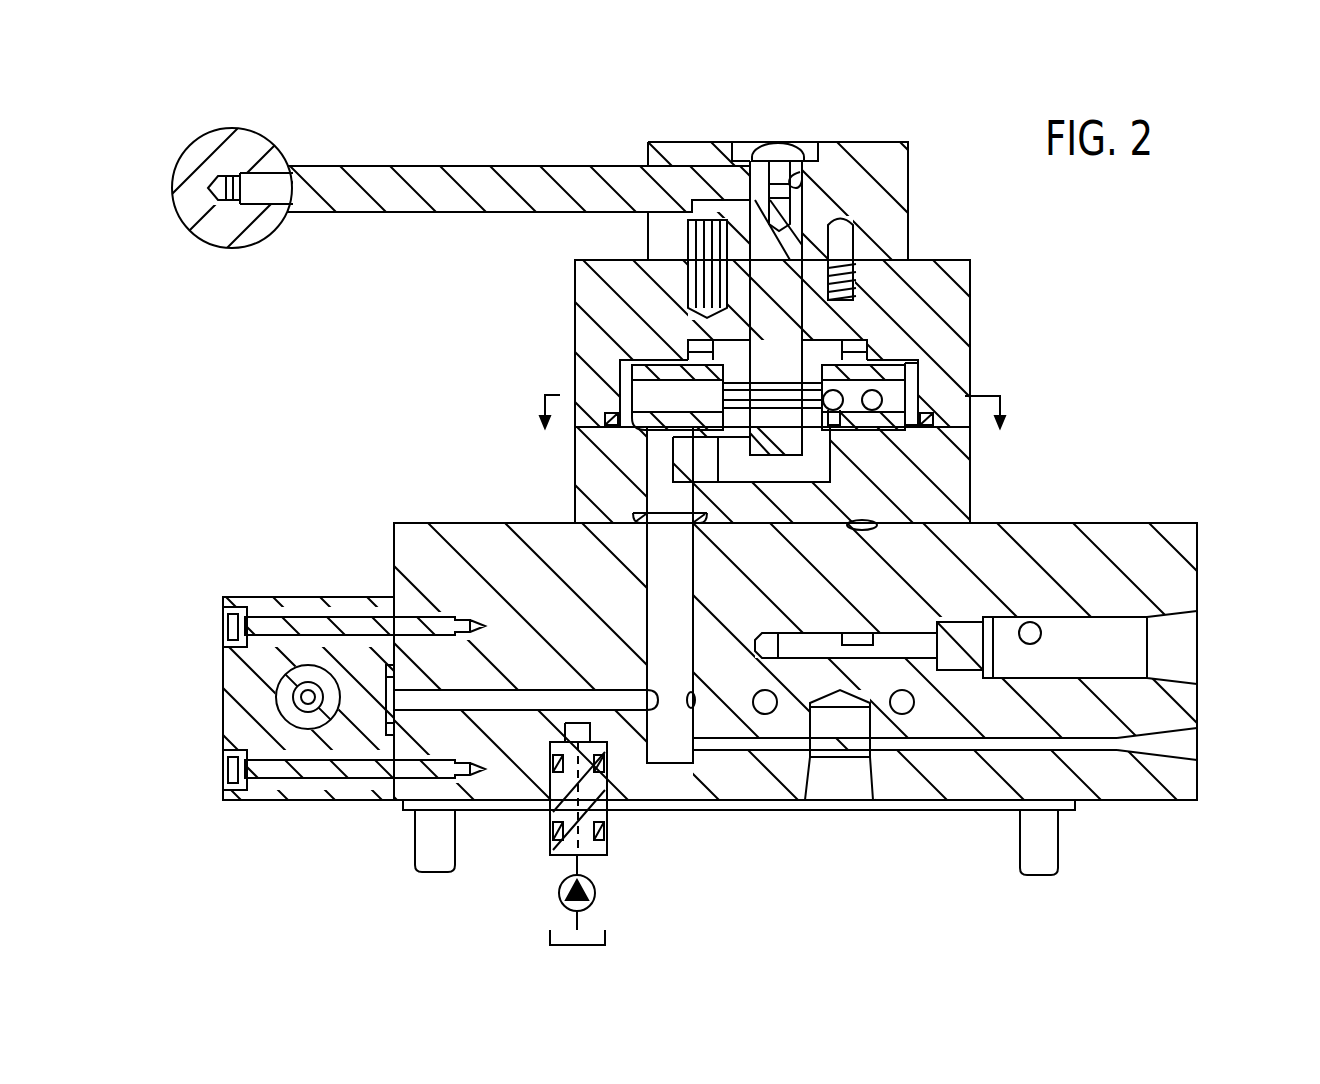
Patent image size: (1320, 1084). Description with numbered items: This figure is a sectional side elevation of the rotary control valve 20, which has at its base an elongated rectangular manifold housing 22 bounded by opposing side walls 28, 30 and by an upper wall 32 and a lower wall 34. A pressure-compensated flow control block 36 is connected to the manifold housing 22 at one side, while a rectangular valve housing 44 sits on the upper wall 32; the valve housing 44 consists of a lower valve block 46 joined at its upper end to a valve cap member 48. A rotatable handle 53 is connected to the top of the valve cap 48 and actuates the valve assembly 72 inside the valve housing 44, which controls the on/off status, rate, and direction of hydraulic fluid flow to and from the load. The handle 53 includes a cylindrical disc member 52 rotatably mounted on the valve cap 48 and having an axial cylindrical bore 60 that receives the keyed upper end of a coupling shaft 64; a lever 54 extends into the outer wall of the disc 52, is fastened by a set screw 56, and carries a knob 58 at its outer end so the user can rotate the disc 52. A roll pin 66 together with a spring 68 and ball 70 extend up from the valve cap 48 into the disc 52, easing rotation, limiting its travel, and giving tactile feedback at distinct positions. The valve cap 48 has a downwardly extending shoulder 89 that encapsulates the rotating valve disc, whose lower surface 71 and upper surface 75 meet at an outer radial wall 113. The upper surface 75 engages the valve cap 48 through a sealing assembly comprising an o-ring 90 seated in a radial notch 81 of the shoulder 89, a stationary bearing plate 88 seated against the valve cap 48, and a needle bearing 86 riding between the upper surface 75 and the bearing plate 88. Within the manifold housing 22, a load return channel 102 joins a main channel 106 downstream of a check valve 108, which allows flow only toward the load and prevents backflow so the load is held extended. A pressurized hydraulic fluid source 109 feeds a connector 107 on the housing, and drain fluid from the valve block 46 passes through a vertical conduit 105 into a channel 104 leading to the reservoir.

The rotary control valve 20 is at (948, 134).
The manifold housing 22 is at (1103, 524).
The side wall 28 is at (392, 550).
The side wall 30 is at (1200, 556).
The upper wall 32 is at (480, 520).
The lower wall 34 is at (1120, 808).
The pressure-compensated flow control block 36 is at (222, 678).
The valve housing 44 is at (970, 301).
The lower valve block 46 is at (968, 488).
The valve cap member 48 is at (972, 262).
The cylindrical disc member 52 is at (908, 172).
The rotatable handle 53 is at (232, 130).
The lever 54 is at (415, 165).
The set screw 56 is at (790, 147).
The knob 58 is at (192, 146).
The cylindrical bore 60 is at (800, 172).
The coupling shaft 64 is at (757, 226).
The roll pin 66 is at (688, 247).
The spring 68 is at (852, 292).
The ball 70 is at (853, 248).
The lower surface 71 is at (883, 432).
The valve assembly 72 is at (905, 367).
The upper surface 75 is at (905, 362).
The radial notch 81 is at (612, 438).
The needle bearing 86 is at (690, 358).
The bearing plate 88 is at (690, 347).
The shoulder 89 is at (640, 522).
The o-ring 90 is at (968, 441).
The load return channel 102 is at (1043, 636).
The channel 104 is at (915, 758).
The vertical conduit 105 is at (695, 637).
The main channel 106 is at (963, 628).
The connector 107 is at (608, 848).
The check valve 108 is at (997, 655).
The pressurized hydraulic fluid source 109 is at (596, 893).
The outer radial wall 113 is at (928, 388).